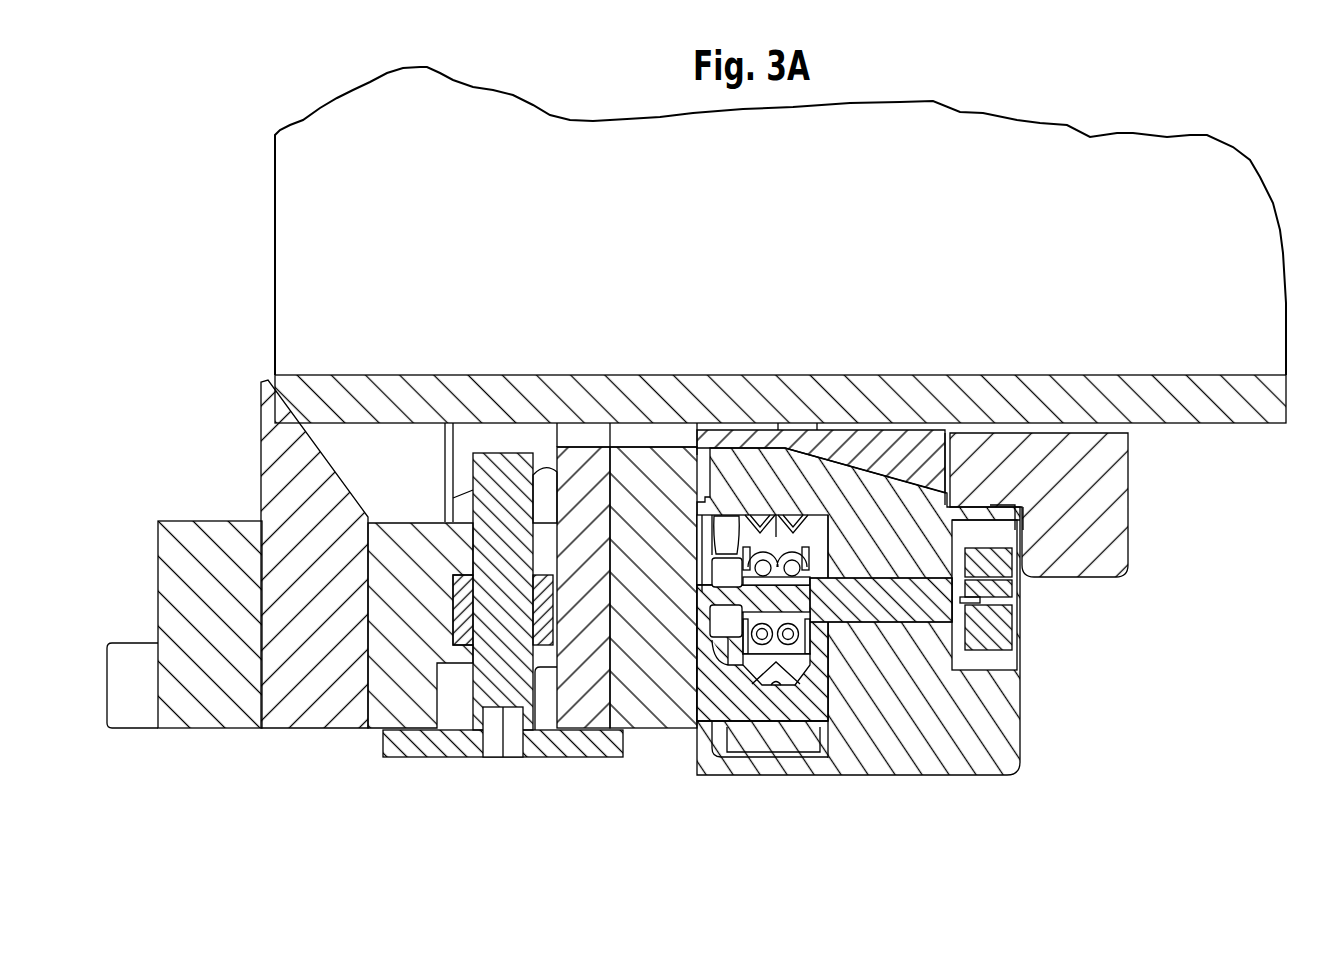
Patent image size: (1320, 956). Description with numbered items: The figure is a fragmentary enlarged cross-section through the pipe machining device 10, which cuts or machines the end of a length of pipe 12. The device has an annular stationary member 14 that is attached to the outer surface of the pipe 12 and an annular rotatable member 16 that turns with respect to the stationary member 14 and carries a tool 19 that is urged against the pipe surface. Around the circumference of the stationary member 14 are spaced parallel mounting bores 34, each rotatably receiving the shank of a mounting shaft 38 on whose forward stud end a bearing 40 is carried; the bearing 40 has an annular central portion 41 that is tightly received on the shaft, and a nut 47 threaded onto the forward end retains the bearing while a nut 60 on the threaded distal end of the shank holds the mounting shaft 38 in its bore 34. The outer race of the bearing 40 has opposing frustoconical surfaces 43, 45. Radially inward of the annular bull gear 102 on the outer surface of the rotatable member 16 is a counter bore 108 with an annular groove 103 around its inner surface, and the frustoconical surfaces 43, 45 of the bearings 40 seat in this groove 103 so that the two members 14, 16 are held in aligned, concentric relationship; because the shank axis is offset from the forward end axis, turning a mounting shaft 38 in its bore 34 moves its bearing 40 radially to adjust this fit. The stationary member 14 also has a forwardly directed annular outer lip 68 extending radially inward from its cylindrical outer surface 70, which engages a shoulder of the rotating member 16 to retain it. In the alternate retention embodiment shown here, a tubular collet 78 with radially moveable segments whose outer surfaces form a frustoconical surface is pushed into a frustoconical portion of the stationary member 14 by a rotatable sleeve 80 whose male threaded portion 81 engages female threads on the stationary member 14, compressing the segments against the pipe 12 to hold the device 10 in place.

The pipe machining device 10 is at (1072, 815).
The pipe 12 is at (322, 374).
The annular stationary member 14 is at (1025, 732).
The annular rotatable member 16 is at (600, 630).
The tool 19 is at (258, 442).
The mounting bore 34 is at (828, 623).
The mounting shaft 38 is at (950, 578).
The bearing 40 is at (822, 582).
The annular central portion 41 is at (895, 705).
The frustoconical surface 43 is at (760, 664).
The frustoconical surface 45 is at (800, 690).
The nut 47 is at (600, 735).
The nut 60 is at (1010, 570).
The annular outer lip 68 is at (697, 752).
The cylindrical outer surface 70 is at (852, 775).
The tubular collet 78 is at (906, 286).
The rotatable sleeve 80 is at (1130, 462).
The male threaded portion 81 is at (1121, 346).
The annular bull gear 102 is at (758, 757).
The annular groove 103 is at (776, 681).
The counter bore 108 is at (727, 662).